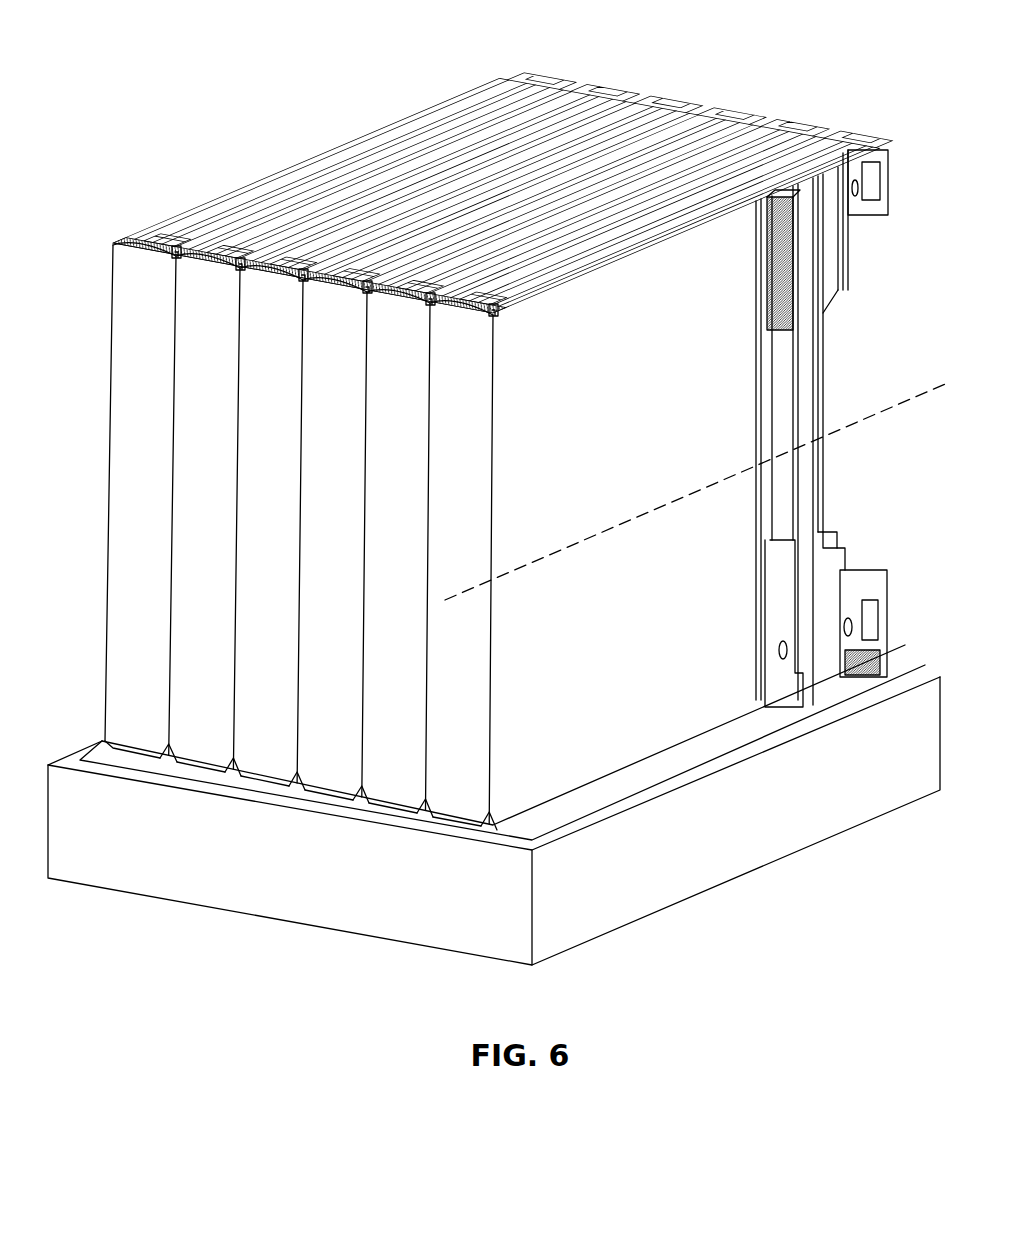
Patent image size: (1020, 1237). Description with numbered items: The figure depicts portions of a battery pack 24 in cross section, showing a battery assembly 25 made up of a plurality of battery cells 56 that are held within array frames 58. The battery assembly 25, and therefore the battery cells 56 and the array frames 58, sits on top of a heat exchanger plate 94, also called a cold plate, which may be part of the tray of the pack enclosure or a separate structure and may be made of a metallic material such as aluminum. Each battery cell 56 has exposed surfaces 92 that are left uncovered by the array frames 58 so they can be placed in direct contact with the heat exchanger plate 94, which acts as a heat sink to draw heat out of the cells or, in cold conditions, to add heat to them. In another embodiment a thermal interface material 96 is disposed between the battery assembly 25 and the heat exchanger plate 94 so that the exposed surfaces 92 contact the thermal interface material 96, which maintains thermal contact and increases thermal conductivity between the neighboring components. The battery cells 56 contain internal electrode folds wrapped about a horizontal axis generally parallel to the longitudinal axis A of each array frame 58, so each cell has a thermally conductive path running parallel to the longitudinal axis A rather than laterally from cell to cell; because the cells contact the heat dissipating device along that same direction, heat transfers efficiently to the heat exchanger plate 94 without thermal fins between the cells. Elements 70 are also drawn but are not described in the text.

The battery pack 24 is at (692, 74).
The battery assembly 25 is at (127, 234).
The battery cell 56 is at (126, 408).
The array frame 58 is at (512, 82).
The foot 70 is at (172, 770).
The exposed surface 92 is at (124, 748).
The heat exchanger plate 94 is at (345, 915).
The thermal interface material 96 is at (580, 808).
The longitudinal axis A is at (912, 395).